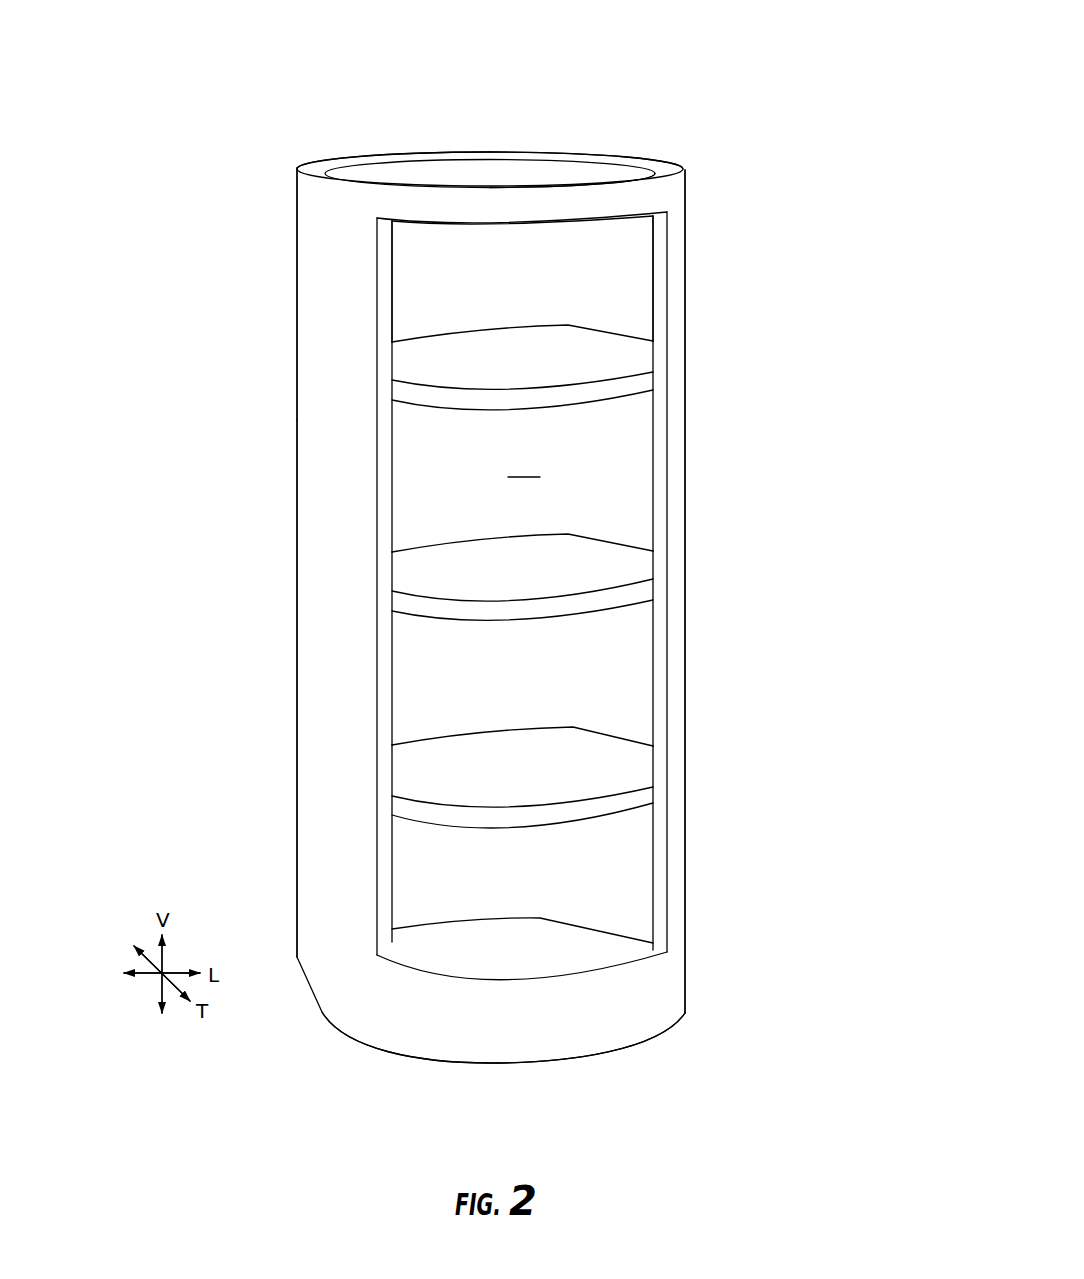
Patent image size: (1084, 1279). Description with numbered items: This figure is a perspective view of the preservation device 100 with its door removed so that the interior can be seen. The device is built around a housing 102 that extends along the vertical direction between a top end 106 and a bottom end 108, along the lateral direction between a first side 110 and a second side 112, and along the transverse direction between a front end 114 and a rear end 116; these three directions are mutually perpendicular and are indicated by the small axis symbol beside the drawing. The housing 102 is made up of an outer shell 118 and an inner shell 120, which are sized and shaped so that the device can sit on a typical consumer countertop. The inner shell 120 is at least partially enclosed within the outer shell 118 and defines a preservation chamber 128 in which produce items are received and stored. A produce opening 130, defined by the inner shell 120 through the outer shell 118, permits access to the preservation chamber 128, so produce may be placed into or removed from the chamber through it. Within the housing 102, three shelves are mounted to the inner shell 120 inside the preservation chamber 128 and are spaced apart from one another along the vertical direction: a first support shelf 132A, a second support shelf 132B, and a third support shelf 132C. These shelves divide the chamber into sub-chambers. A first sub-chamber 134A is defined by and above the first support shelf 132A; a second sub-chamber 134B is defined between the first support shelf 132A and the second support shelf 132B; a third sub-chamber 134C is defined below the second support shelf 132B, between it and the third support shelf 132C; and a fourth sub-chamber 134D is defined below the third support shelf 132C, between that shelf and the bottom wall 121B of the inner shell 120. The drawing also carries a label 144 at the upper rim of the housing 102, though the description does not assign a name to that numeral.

The preservation device 100 is at (771, 78).
The housing 102 is at (683, 263).
The top end 106 is at (608, 168).
The bottom end 108 is at (583, 1065).
The first side 110 is at (327, 605).
The second side 112 is at (688, 547).
The front end 114 is at (628, 200).
The rear end 116 is at (465, 150).
The outer shell 118 is at (310, 375).
The inner shell 120 is at (404, 296).
The bottom wall 121B is at (608, 947).
The preservation chamber 128 is at (580, 347).
The produce opening 130 is at (528, 217).
The first support shelf 132A is at (635, 387).
The second support shelf 132B is at (635, 597).
The third support shelf 132C is at (635, 799).
The first sub-chamber 134A is at (625, 289).
The second sub-chamber 134B is at (625, 457).
The third sub-chamber 134C is at (625, 682).
The fourth sub-chamber 134D is at (625, 869).
The rim 144 is at (312, 158).